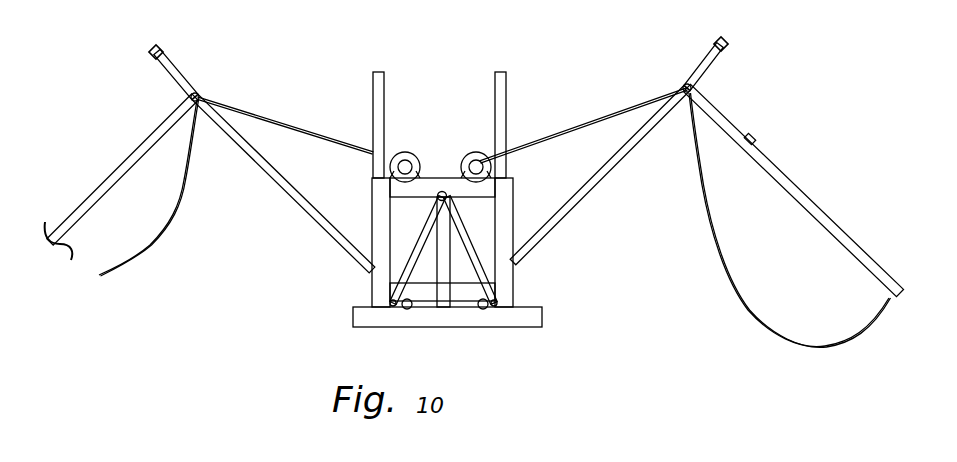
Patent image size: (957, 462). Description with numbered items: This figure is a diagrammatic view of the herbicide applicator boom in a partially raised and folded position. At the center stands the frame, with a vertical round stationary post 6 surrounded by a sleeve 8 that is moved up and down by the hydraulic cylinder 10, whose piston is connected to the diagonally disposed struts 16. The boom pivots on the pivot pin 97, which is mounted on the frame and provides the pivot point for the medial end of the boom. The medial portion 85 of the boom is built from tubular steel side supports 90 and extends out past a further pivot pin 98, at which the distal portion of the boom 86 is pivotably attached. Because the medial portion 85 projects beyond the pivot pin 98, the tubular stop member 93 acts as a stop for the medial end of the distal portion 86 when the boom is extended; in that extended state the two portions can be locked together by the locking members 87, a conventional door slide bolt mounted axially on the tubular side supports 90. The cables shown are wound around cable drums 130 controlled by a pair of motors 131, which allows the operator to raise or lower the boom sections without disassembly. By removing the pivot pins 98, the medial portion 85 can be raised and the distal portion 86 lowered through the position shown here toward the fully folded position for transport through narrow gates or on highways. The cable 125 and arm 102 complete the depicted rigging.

The tubular stop member 93 is at (163, 44).
The arm 102 is at (153, 128).
The tubular steel side supports 90 is at (282, 173).
The pivot pin 98 is at (694, 89).
The cable 125 is at (570, 118).
The medial portion 85 is at (627, 166).
The vertical round stationary post 6 is at (373, 92).
The sleeve 8 is at (372, 223).
The cable drums 130 is at (468, 151).
The motors 131 is at (488, 156).
The hydraulic cylinder 10 is at (441, 291).
The diagonally disposed struts 16 is at (463, 223).
The pivot pin 97 is at (405, 309).
The locking members 87 is at (755, 136).
The distal portion of the boom 86 is at (780, 164).